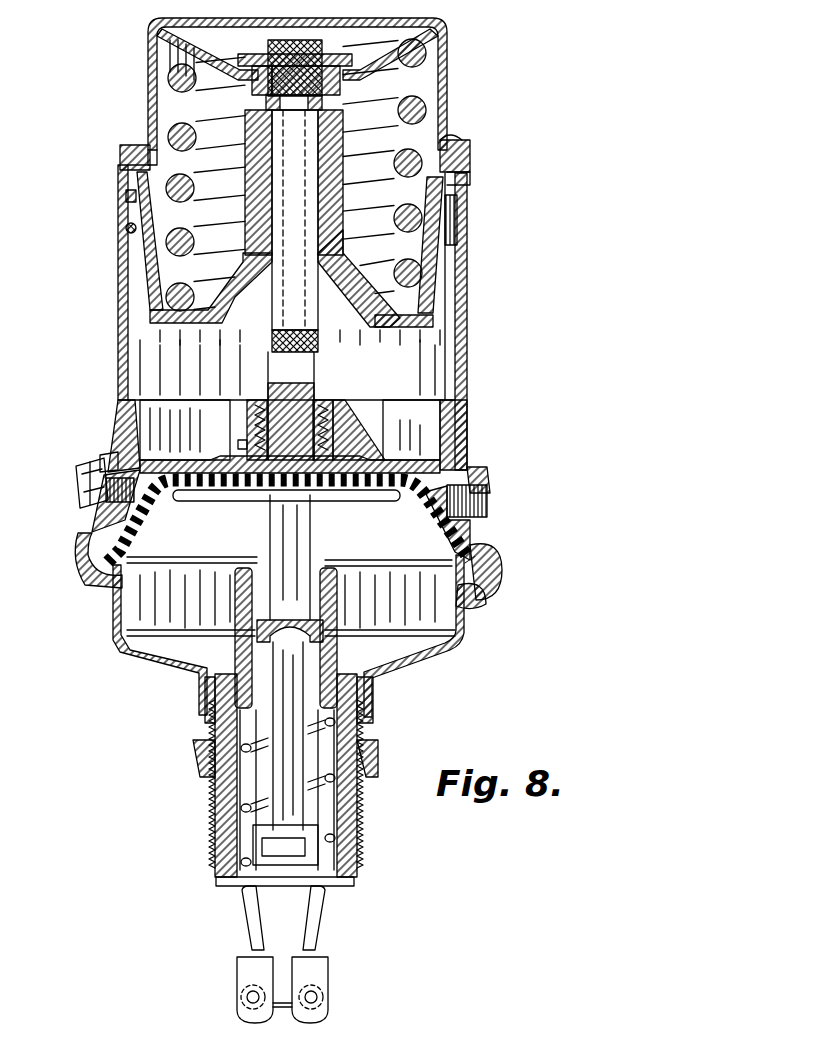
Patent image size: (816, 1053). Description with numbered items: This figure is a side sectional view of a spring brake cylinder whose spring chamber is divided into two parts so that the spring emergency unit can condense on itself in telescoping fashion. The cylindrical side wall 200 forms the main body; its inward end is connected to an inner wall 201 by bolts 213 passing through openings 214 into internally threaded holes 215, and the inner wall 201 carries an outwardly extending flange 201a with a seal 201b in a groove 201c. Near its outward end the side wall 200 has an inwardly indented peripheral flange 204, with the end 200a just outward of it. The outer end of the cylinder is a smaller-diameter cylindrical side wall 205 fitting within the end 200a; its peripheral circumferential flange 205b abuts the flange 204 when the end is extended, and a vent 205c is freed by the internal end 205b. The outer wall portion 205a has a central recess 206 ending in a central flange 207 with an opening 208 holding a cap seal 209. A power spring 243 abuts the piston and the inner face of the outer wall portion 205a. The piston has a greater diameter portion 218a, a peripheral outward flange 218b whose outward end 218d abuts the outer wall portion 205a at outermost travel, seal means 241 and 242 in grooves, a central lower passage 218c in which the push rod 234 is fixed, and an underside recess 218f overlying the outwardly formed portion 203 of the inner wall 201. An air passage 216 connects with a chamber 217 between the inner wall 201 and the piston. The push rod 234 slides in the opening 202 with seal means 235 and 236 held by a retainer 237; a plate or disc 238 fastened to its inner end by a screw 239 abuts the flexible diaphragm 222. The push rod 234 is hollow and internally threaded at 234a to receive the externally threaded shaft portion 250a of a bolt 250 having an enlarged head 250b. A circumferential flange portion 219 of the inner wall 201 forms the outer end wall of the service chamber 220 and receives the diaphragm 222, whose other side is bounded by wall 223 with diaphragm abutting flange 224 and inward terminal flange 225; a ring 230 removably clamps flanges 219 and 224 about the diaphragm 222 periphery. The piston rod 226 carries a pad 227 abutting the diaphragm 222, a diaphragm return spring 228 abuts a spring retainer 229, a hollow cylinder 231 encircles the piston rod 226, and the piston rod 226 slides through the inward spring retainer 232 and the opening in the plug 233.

The cylindrical side wall 200 is at (468, 345).
The end of side wall 200a is at (462, 140).
The inner wall 201 is at (378, 440).
The outwardly extending flange 201a is at (142, 404).
The seal 201b is at (120, 405).
The groove 201c is at (118, 430).
The opening 202 is at (322, 400).
The outwardly formed portion 203 is at (268, 400).
The inwardly indented peripheral flange 204 is at (470, 150).
The cylindrical side wall 205 is at (448, 72).
The outer wall portion 205a is at (430, 34).
The peripheral circumferential flange 205b is at (470, 168).
The vent 205c is at (120, 155).
The recess 206 is at (354, 56).
The central flange 207 is at (340, 80).
The opening 208 is at (252, 84).
The cap seal 209 is at (290, 40).
The bolts 213 is at (76, 484).
The openings 214 is at (116, 455).
The internally threaded holes 215 is at (128, 482).
The air passage 216 is at (438, 450).
The chamber 217 is at (408, 375).
The greater outer diameter portion 218a is at (342, 235).
The peripheral outward flange 218b is at (420, 290).
The central lower passage 218c is at (335, 285).
The outward end 218d is at (458, 205).
The recess 218f is at (215, 290).
The circumferential flange portion 219 is at (140, 542).
The service chamber 220 is at (240, 445).
The flexible diaphragm 222 is at (433, 525).
The service chamber wall 223 is at (430, 660).
The diaphragm abutting flange 224 is at (484, 600).
The inward terminal flange 225 is at (374, 700).
The piston rod 226 is at (305, 596).
The pad 227 is at (338, 495).
The diaphragm return spring 228 is at (328, 834).
The spring retainer 229 is at (236, 632).
The ring 230 is at (503, 562).
The hollow cylinder 231 is at (209, 792).
The inward spring retainer 232 is at (285, 845).
The plug 233 is at (216, 881).
The push rod 234 is at (318, 343).
The internally threaded portion 234a is at (247, 143).
The seal means 235 is at (330, 425).
The seal means 236 is at (255, 425).
The retainer 237 is at (350, 432).
The plate or disc 238 is at (215, 463).
The screw 239 is at (291, 406).
The seal means 241 is at (126, 196).
The seal means 242 is at (126, 229).
The power spring 243 is at (160, 128).
The bolt 250 is at (300, 115).
The externally threaded shaft portion 250a is at (272, 228).
The enlarged head 250b is at (246, 124).